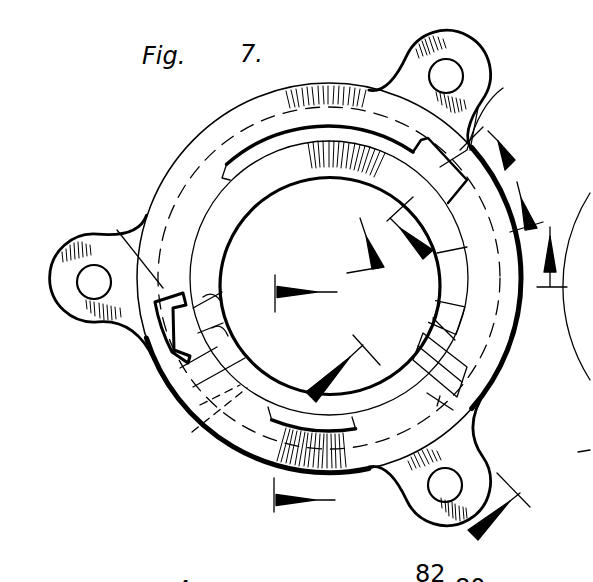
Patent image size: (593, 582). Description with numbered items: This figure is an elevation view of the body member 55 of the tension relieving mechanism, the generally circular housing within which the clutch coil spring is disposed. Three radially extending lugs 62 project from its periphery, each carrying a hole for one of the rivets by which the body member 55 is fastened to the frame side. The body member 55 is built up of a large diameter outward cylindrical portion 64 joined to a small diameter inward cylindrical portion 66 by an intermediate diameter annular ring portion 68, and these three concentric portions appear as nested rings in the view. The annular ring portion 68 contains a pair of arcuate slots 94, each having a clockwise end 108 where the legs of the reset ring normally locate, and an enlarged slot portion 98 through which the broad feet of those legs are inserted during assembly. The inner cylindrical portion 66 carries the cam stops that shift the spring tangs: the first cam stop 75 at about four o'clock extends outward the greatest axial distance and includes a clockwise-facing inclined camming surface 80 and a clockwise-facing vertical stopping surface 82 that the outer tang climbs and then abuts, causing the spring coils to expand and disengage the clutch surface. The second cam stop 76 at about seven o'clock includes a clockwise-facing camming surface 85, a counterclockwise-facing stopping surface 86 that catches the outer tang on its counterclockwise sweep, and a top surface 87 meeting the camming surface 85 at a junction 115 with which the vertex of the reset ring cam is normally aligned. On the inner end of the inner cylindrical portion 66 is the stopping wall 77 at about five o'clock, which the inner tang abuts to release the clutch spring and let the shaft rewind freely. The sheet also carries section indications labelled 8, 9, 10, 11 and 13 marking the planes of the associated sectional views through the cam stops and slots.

The body member 55 is at (172, 162).
The radially extending lugs 62 is at (418, 62).
The enlarged slot portions 98 is at (319, 175).
The outward cylindrical portion 64 is at (232, 438).
The stopping surface 86 is at (230, 280).
The clockwise ends 108 is at (228, 178).
The arcuate slots 94 is at (318, 128).
The second cam stop 76 is at (167, 380).
The annular ring portion 68 is at (203, 398).
The inward cylindrical portion 66 is at (205, 430).
The top surface 87 is at (228, 308).
The junction 115 is at (272, 313).
The camming surface 85 is at (240, 345).
The stopping surface 82 is at (440, 326).
The inclined camming surface 80 is at (458, 297).
The first cam stop 75 is at (467, 327).
The stopping wall 77 is at (470, 410).
The section line 8- 8 is at (443, 223).
The section line 9- 9 is at (464, 199).
The section line 10- 10 is at (419, 443).
The section line 11- 11 is at (323, 393).
The section line 13- 13 is at (554, 245).